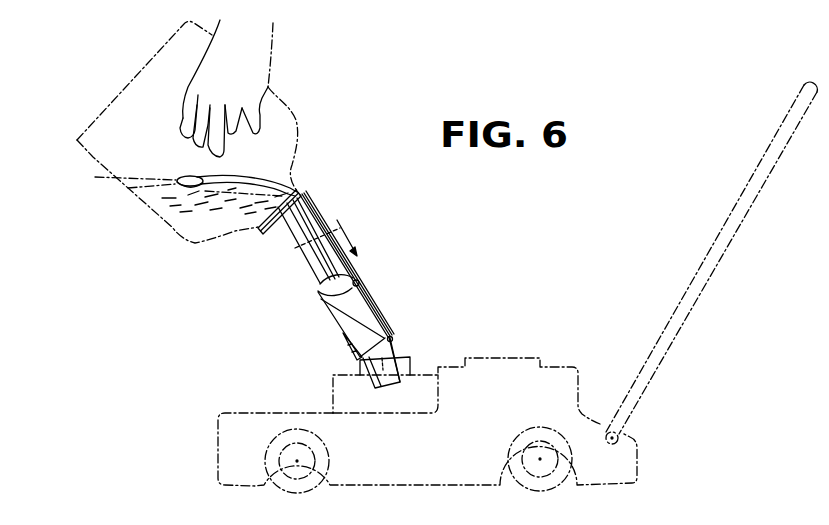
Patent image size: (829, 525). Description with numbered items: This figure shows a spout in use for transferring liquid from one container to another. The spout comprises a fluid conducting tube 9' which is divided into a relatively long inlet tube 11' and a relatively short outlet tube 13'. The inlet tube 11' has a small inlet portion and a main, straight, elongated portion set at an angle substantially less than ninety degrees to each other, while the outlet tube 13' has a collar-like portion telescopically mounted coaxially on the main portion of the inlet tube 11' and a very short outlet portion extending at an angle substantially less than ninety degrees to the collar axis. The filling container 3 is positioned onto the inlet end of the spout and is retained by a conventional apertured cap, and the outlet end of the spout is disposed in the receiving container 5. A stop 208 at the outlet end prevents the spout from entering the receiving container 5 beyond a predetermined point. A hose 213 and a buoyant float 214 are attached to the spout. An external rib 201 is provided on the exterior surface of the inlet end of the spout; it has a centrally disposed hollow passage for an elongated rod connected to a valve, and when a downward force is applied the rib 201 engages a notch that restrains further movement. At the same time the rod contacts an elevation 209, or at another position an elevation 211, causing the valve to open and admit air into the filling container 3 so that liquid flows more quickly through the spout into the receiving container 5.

The filling container 3 is at (279, 101).
The hose 213 is at (273, 172).
The buoyant float 214 is at (180, 188).
The external rib 201 is at (317, 220).
The inlet tube 11' is at (314, 286).
The fluid conducting tube 9' is at (325, 293).
The elevation 211 is at (320, 290).
The elevation 209 is at (359, 283).
The outlet tube 13' is at (394, 324).
The stop 208 is at (348, 348).
The receiving container 5 is at (333, 389).